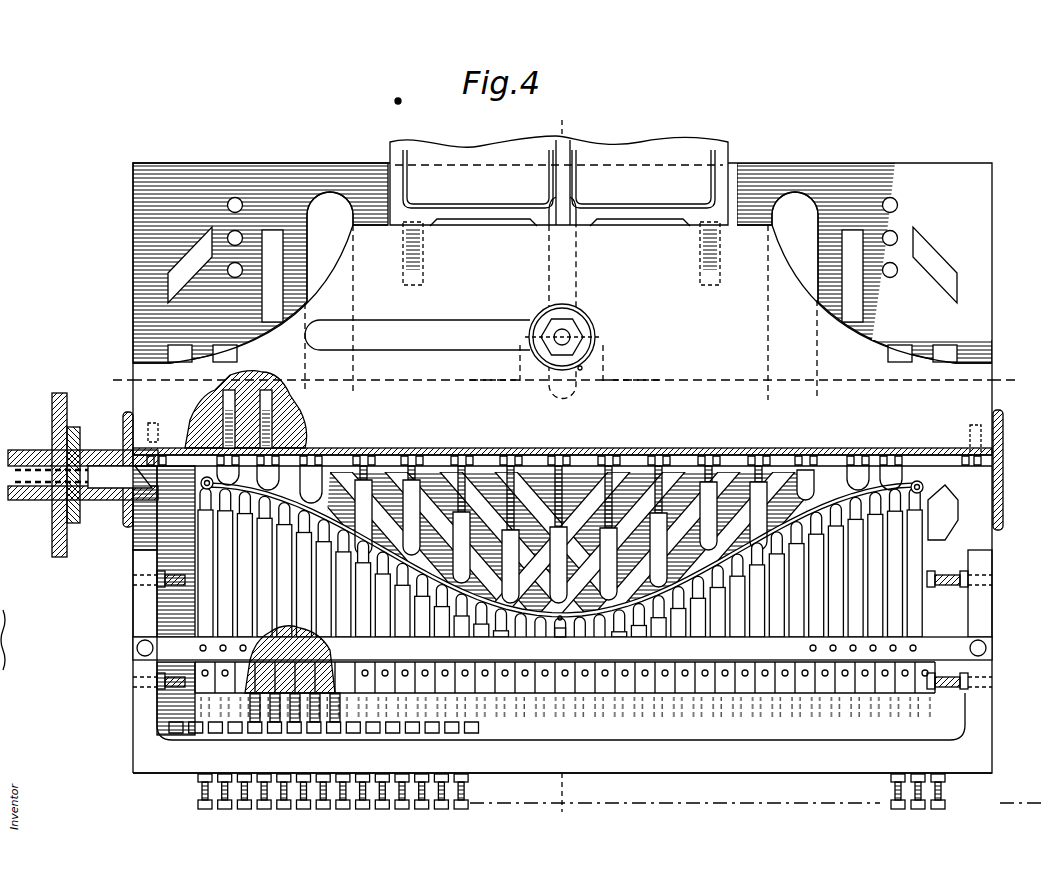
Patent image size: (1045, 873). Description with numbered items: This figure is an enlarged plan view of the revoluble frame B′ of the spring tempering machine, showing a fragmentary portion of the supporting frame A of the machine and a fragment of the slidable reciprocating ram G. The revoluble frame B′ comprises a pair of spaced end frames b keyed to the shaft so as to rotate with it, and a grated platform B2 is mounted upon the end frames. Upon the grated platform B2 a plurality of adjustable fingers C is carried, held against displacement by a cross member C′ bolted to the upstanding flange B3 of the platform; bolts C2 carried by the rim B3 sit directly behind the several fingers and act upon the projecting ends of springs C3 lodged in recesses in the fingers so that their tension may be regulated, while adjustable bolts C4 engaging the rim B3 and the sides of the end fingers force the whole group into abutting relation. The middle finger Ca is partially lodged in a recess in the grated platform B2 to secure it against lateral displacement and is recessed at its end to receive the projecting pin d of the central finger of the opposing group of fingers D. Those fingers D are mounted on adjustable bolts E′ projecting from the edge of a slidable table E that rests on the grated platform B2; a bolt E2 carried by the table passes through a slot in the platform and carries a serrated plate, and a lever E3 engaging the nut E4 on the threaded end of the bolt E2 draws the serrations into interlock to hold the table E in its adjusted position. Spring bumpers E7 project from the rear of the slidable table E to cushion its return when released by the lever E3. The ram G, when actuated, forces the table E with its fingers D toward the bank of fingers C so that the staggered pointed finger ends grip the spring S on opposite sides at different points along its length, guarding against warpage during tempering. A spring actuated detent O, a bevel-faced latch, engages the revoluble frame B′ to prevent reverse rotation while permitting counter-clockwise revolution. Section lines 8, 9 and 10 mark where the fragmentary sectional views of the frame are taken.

The section line 10— 10 is at (757, 469).
The reciprocating ram G is at (559, 181).
The grated platform B2 is at (133, 263).
The slidable table E is at (562, 321).
The spring bumper E7 is at (703, 238).
The end frame b is at (578, 284).
The lever E3 is at (470, 345).
The bolt E2 is at (595, 337).
The nut E4 is at (575, 348).
The section line 9— 9 is at (564, 382).
The adjustable bolt E′ is at (680, 455).
The frame of the machine A is at (52, 523).
The spring actuated detent O is at (115, 488).
The upstanding flange B3 is at (457, 760).
The adjustable bolt C4 is at (950, 584).
The section line 8— 8 is at (1012, 683).
The adjustable finger D is at (562, 546).
The adjustable finger C is at (560, 562).
The spring S is at (562, 547).
The cross member C′ is at (552, 630).
The middle finger Ca is at (563, 620).
The projecting pin d is at (560, 615).
The spring C3 is at (337, 707).
The revoluble frame B′ is at (938, 731).
The bolt C2 is at (571, 807).